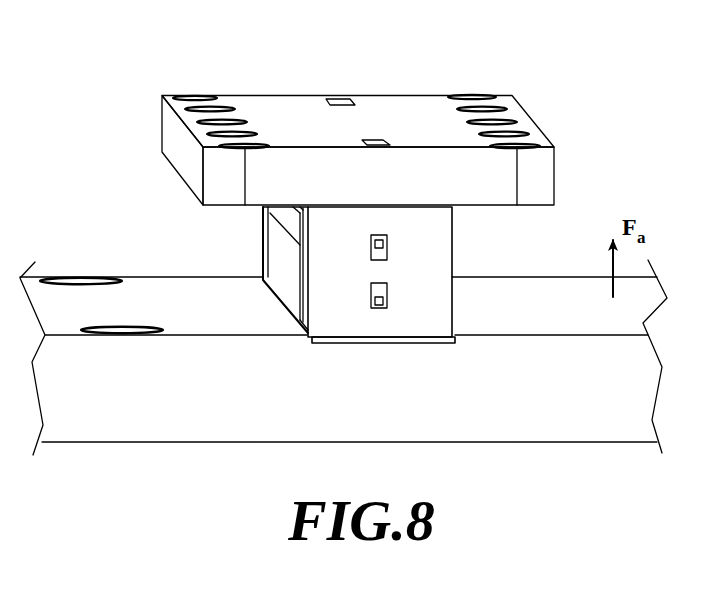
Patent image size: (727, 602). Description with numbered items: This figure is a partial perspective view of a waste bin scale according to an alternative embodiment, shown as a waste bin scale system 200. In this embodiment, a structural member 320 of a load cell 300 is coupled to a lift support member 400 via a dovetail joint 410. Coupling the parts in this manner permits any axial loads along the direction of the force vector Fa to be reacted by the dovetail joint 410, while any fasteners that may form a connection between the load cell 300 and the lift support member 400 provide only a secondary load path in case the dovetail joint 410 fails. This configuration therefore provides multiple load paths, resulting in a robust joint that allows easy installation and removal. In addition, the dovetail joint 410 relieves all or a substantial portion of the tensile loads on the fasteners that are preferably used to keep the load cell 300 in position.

The waste bin scale system 200 is at (385, 195).
The load cell 300 is at (180, 69).
The structural member 320 is at (435, 252).
The lift support member 400 is at (114, 219).
The dovetail joint 410 is at (290, 323).